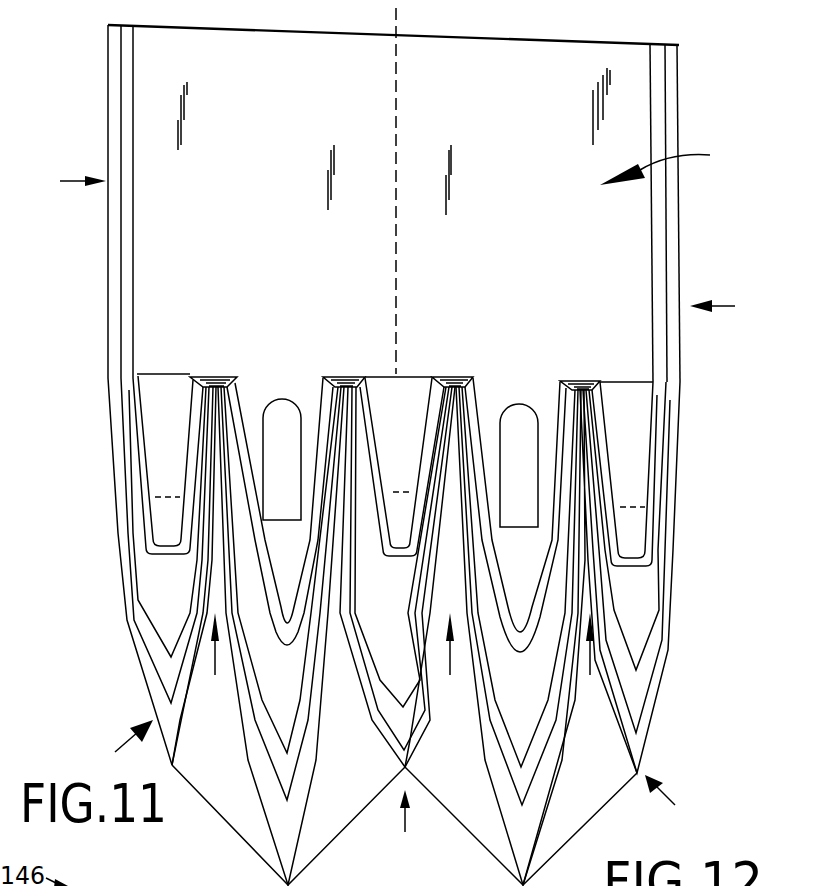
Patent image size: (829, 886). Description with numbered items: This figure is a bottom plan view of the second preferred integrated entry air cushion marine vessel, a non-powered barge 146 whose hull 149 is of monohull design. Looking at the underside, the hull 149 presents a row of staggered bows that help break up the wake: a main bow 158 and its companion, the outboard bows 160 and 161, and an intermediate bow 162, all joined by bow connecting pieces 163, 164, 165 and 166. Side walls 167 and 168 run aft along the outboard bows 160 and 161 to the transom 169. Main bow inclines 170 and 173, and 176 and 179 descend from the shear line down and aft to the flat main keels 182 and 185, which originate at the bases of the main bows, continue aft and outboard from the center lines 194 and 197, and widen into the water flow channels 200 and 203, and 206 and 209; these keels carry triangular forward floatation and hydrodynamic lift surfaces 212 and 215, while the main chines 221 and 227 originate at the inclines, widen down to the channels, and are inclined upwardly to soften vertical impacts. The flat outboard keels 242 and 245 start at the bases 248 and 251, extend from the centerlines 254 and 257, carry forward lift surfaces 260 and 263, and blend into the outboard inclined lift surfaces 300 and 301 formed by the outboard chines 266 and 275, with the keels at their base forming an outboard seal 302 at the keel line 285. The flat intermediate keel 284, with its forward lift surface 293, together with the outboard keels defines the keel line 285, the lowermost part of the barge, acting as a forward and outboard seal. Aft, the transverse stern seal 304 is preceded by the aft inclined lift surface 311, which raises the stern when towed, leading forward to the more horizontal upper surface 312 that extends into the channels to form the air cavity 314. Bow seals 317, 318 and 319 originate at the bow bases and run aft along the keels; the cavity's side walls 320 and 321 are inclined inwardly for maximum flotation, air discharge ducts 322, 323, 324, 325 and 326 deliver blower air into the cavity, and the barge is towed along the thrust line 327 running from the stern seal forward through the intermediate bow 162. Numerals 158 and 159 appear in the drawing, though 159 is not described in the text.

The non-powered barge 146 is at (58, 181).
The hull 149 is at (735, 312).
The main bow 158 is at (224, 878).
The tip 159 is at (422, 880).
The outboard bow 160 is at (113, 747).
The outboard bow 161 is at (681, 796).
The intermediate bow 162 is at (396, 615).
The bow connecting piece 163 is at (240, 788).
The bow connecting piece 164 is at (368, 788).
The bow connecting piece 165 is at (482, 792).
The bow connecting piece 166 is at (605, 792).
The side wall 167 is at (108, 79).
The side wall 168 is at (679, 263).
The transom 169 is at (482, 34).
The main bow incline 170 is at (274, 740).
The main bow incline 173 is at (308, 727).
The main bow incline 176 is at (495, 743).
The main bow incline 179 is at (558, 732).
The main keel 182 is at (298, 720).
The main keel 185 is at (540, 725).
The center line 194 is at (287, 830).
The center line 197 is at (522, 845).
The water flow channel 200 is at (215, 658).
The water flow channel 203 is at (679, 203).
The water flow channel 206 is at (412, 568).
The water flow channel 209 is at (590, 659).
The forward floatation and hydrodynamic lift surface 212 is at (540, 681).
The forward floatation and hydrodynamic lift surface 215 is at (300, 673).
The main chine 221 is at (490, 722).
The main chine 227 is at (258, 707).
The outboard keel 242 is at (150, 534).
The outboard keel 245 is at (653, 547).
The base 248 is at (640, 636).
The base 251 is at (158, 630).
The centerline 254 is at (163, 710).
The centerline 257 is at (634, 740).
The forward floatation and hydrodynamic lift surface 260 is at (165, 570).
The forward floatation and hydrodynamic lift surface 263 is at (633, 588).
The outboard chine 266 is at (145, 590).
The outboard chine 275 is at (680, 603).
The intermediate keel 284 is at (420, 552).
The keel line 285 is at (335, 518).
The forward floatation and hydrodynamic lift surface 293 is at (407, 612).
The outboard inclined lift surface 300 is at (108, 236).
The outboard inclined lift surface 301 is at (680, 355).
The outboard seal 302 is at (121, 142).
The stern seal 304 is at (357, 45).
The aft inclined lift surface 311 is at (338, 262).
The upper surface 312 is at (507, 262).
The air cavity 314 is at (681, 163).
The bow seal 317 is at (170, 540).
The bow seal 318 is at (632, 550).
The bow seal 319 is at (402, 540).
The side wall of air cavity 320 is at (133, 228).
The side wall of air cavity 321 is at (652, 236).
The air discharge duct 322 is at (170, 372).
The air discharge duct 323 is at (282, 398).
The air discharge duct 324 is at (372, 377).
The air discharge duct 325 is at (516, 405).
The air discharge duct 326 is at (612, 382).
The thrust line 327 is at (398, 140).